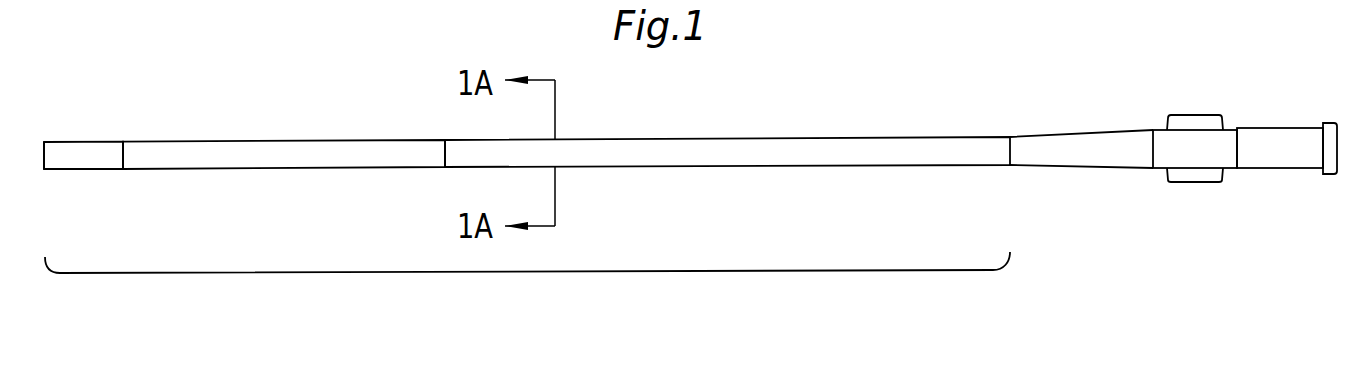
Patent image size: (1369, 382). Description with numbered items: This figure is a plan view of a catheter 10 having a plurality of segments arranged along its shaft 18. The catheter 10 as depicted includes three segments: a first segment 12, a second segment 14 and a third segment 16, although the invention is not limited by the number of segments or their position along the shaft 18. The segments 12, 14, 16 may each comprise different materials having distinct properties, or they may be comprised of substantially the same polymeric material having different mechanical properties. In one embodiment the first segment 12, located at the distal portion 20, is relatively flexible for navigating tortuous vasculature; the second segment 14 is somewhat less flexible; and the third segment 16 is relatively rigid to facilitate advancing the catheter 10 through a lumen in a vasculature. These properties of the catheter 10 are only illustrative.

The catheter 10 is at (690, 93).
The first segment 12 is at (98, 142).
The second segment 14 is at (290, 140).
The third segment 16 is at (890, 137).
The shaft 18 is at (703, 270).
The distal portion 20 is at (70, 127).